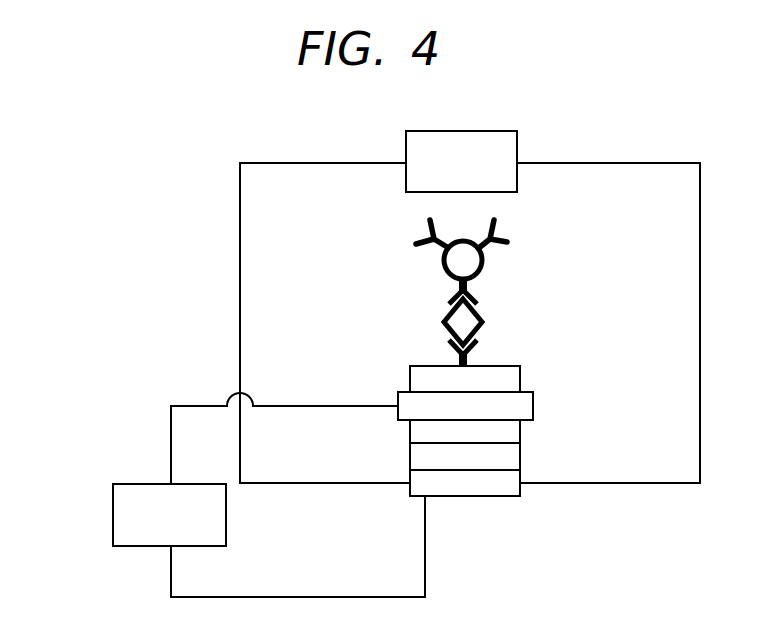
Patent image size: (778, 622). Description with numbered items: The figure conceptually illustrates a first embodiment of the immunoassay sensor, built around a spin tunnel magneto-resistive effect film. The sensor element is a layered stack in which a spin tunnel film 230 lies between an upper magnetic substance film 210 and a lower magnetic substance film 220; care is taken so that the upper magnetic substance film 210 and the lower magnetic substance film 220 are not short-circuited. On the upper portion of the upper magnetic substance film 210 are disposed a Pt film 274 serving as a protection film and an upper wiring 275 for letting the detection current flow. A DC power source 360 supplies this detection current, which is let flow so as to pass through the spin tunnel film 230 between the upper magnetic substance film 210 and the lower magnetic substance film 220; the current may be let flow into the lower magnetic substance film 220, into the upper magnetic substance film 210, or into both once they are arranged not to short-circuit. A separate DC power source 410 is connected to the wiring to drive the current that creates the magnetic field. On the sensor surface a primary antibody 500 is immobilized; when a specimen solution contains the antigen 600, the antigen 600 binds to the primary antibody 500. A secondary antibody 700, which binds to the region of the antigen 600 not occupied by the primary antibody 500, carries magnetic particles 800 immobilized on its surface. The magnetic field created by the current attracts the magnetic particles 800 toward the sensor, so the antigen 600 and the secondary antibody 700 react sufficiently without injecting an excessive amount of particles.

The DC power source 410 is at (492, 131).
The DC power source 360 is at (113, 518).
The magnetic particles 800 is at (466, 260).
The secondary antibody 700 is at (472, 286).
The antigen 600 is at (463, 322).
The primary antibody 500 is at (457, 354).
The upper wiring 275 is at (507, 380).
The Pt film 274 is at (522, 405).
The upper magnetic substance film 210 is at (508, 432).
The spin tunnel film 230 is at (508, 457).
The lower magnetic substance film 220 is at (478, 487).